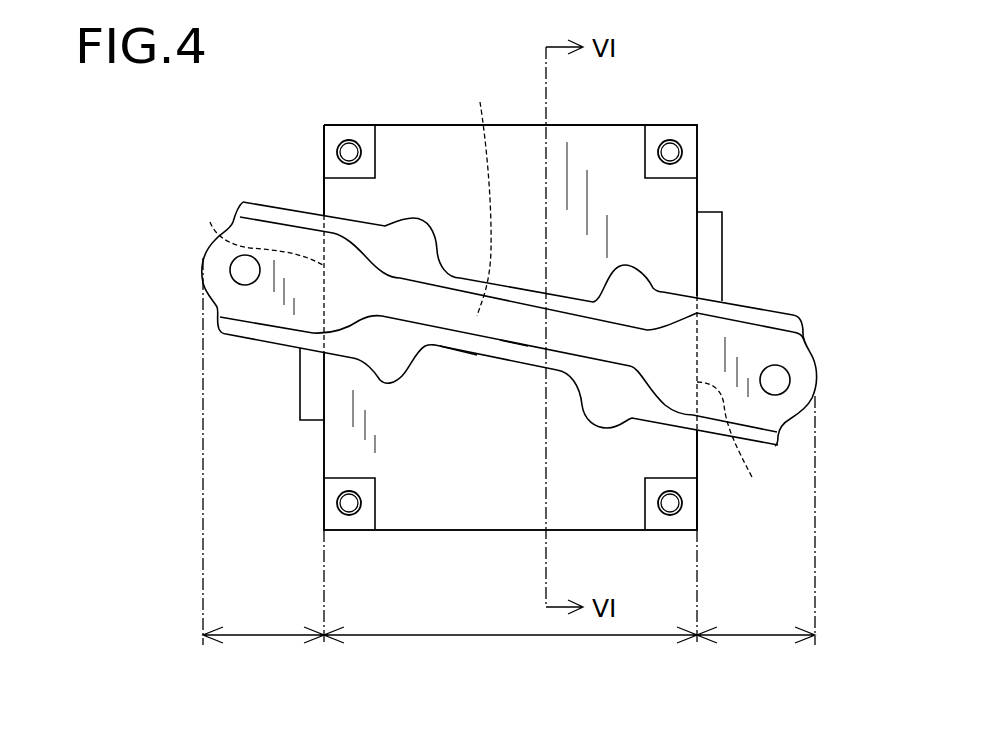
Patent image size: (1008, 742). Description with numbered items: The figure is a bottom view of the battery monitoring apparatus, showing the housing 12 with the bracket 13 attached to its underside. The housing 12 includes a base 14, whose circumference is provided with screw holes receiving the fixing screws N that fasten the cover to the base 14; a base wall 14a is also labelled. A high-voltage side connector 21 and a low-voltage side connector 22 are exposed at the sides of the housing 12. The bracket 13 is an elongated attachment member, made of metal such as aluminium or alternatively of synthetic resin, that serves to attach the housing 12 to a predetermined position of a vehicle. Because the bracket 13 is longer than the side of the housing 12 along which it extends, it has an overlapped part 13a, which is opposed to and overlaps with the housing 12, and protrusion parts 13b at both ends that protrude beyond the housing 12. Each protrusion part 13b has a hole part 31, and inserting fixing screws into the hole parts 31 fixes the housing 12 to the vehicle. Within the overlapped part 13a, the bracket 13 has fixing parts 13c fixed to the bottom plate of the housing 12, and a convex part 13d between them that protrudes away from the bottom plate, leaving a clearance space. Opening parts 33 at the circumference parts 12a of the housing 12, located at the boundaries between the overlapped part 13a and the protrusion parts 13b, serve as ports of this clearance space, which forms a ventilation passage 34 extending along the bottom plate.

The housing 12 is at (375, 532).
The circumference part 12a is at (324, 189).
The bracket 13 is at (782, 313).
The overlapped part 13a is at (510, 600).
The protrusion part 13b is at (509, 464).
The fixing part 13c is at (477, 355).
The convex part 13d is at (528, 347).
The base 14 is at (581, 125).
The cover wall 14a is at (405, 137).
The high-voltage side connector 21 is at (722, 247).
The low-voltage side connector 22 is at (300, 403).
The hole part 31 is at (242, 268).
The opening part 33 is at (476, 354).
The passage 34 is at (486, 197).
The fixing screw N is at (347, 139).